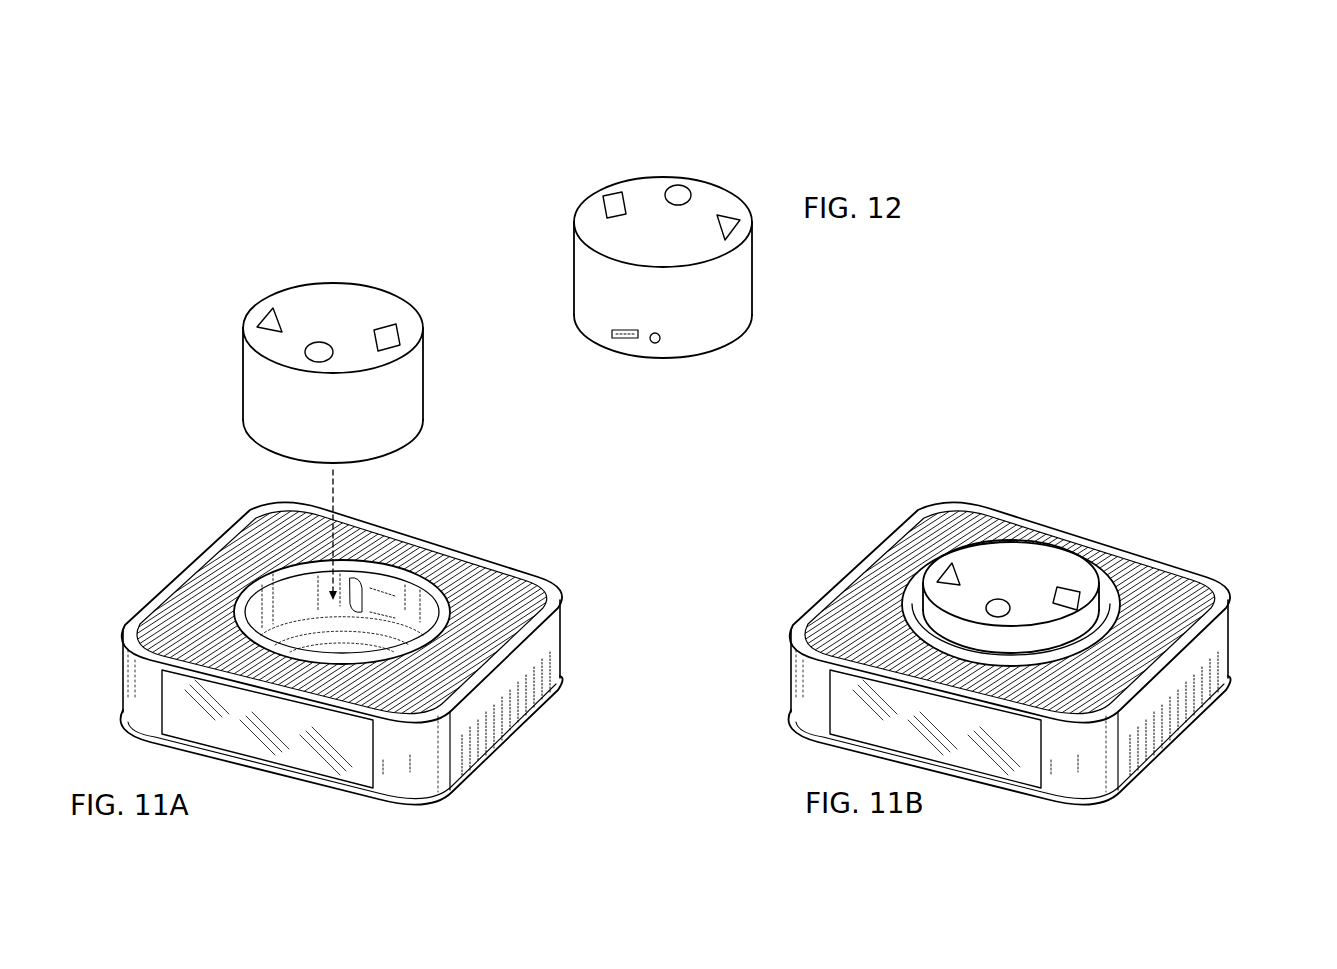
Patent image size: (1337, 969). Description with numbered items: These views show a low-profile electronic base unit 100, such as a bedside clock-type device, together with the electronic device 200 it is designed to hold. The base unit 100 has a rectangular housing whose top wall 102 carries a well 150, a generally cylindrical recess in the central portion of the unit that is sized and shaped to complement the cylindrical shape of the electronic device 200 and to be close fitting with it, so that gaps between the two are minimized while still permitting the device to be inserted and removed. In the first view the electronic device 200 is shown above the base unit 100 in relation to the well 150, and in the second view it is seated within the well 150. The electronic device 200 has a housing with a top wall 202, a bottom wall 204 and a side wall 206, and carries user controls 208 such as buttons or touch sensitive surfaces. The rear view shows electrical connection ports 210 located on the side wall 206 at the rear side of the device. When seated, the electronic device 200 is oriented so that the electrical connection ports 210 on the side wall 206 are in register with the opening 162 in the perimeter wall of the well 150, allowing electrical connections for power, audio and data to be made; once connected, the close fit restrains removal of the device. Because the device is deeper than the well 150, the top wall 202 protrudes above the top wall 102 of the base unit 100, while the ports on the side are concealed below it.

In FIG. 11A, the base unit 100 is at (128, 568).
In FIG. 11B, the base unit 100 is at (1012, 619).
In FIG. 11B, the top wall 102 is at (1155, 551).
In FIG. 11A, the well 150 is at (283, 600).
In FIG. 11A, the opening 162 is at (405, 600).
In FIG. 11A, the electronic device 200 is at (278, 290).
In FIG. 12, the electronic device 200 is at (690, 239).
In FIG. 11B, the electronic device 200 is at (988, 538).
In FIG. 12, the top wall 202 is at (587, 233).
In FIG. 11B, the top wall 202 is at (980, 557).
In FIG. 12, the bottom wall 204 is at (707, 350).
In FIG. 12, the side wall 206 is at (735, 282).
In FIG. 12, the user controls 208 is at (622, 190).
In FIG. 12, the electrical connection ports 210 is at (612, 341).